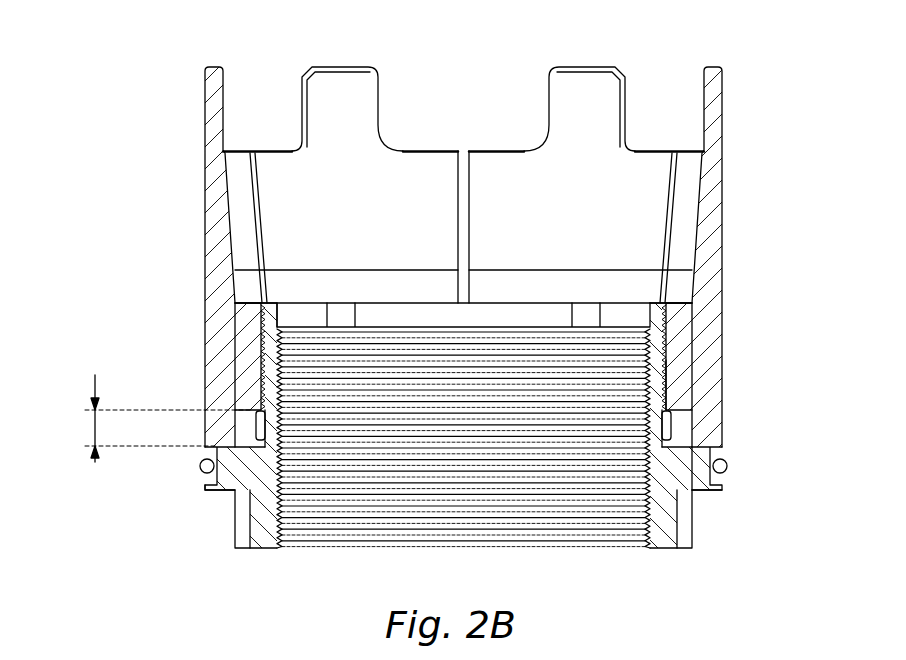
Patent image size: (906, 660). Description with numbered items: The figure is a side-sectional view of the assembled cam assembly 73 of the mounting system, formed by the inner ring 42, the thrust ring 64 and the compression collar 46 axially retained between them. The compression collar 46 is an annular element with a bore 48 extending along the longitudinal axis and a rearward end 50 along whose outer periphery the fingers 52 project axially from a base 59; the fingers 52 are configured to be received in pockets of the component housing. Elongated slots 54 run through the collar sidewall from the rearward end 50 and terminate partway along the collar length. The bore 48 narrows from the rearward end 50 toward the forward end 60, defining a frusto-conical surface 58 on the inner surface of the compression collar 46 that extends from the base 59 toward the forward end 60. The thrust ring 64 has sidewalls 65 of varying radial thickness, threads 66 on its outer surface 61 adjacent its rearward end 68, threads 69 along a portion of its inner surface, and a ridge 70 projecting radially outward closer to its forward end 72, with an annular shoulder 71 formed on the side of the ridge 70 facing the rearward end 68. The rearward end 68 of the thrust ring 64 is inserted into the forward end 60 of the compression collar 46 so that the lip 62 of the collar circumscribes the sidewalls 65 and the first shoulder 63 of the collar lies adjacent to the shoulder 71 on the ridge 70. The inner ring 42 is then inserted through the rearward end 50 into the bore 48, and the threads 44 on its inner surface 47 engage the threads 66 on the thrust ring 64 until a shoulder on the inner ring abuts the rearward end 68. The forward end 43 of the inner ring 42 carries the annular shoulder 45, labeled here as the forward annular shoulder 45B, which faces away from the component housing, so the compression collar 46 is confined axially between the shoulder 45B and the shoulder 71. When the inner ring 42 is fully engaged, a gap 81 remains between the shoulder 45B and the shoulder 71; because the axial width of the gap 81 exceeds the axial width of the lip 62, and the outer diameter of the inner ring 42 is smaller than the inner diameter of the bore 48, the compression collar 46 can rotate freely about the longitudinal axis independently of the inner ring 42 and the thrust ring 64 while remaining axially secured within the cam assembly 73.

The inner ring 42 is at (240, 358).
The forward end 43 is at (695, 418).
The threads 44 is at (663, 383).
The liner ring 45 is at (670, 341).
The forward annular shoulder 45B is at (250, 418).
The compression collar 46 is at (203, 279).
The inner surface 47 is at (695, 307).
The bore 48 is at (510, 177).
The rearward end 50 is at (602, 66).
The fingers 52 is at (214, 80).
The elongated slots 54 is at (262, 219).
The frusto-conical surface 58 is at (690, 222).
The base 59 is at (420, 150).
The forward end 60 is at (713, 487).
The outer surface 61 is at (262, 332).
The lip 62 is at (256, 432).
The first shoulder 63 is at (727, 463).
The thrust ring 64 is at (204, 484).
The sidewalls 65 is at (665, 535).
The threads 66 is at (668, 377).
The rearward end 68 is at (408, 328).
The threads 69 is at (547, 340).
The ridge 70 is at (199, 466).
The annular shoulder 71 is at (692, 432).
The forward end 72 is at (266, 551).
The cam assembly 73 is at (191, 552).
The gap 81 is at (95, 428).